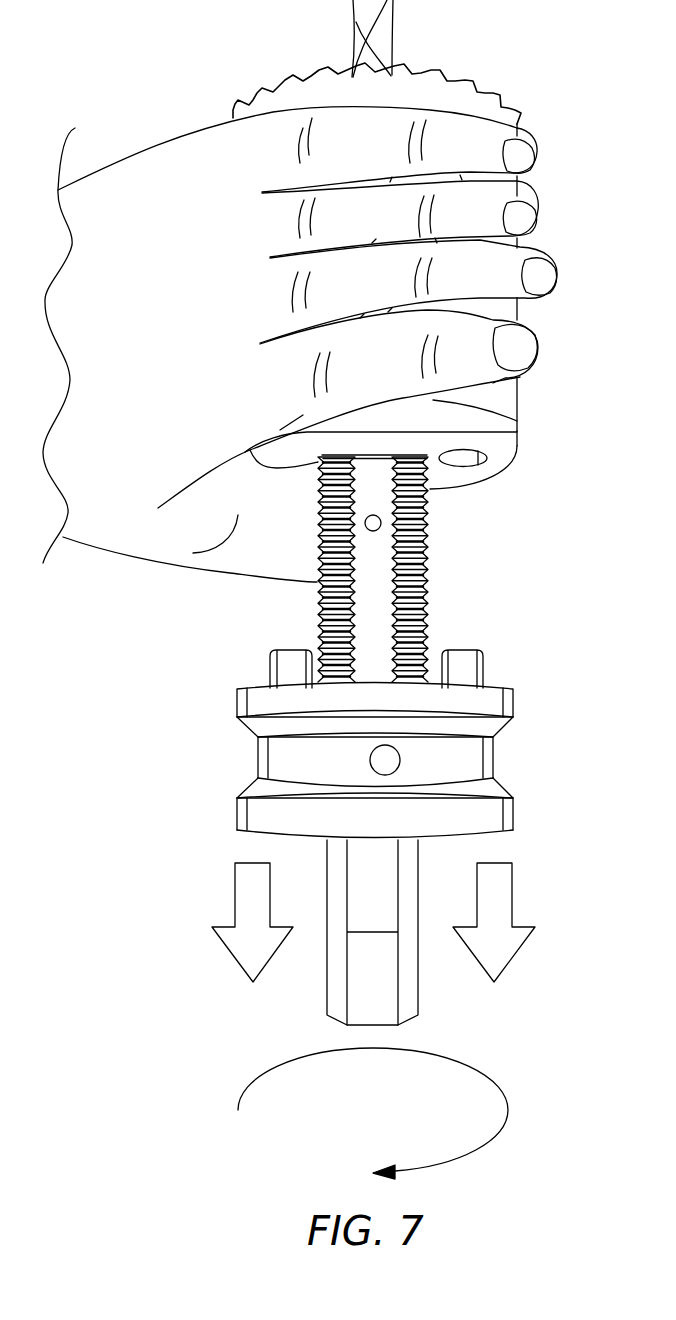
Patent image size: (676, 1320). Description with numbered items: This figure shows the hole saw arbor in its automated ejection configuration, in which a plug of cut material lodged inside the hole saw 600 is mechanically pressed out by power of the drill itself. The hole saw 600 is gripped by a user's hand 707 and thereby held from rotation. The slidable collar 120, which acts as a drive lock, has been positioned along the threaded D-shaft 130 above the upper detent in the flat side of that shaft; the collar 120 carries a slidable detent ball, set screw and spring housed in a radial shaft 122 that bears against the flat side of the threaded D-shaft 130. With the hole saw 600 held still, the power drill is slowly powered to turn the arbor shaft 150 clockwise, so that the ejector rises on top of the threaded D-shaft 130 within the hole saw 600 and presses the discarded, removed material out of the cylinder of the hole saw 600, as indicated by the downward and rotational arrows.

The hand 707 is at (150, 160).
The hole saw 600 is at (510, 126).
The threaded D-shaft 130 is at (430, 588).
The slidable collar 120 is at (513, 703).
The radial shaft 122 is at (390, 762).
The shaft 150 is at (418, 998).